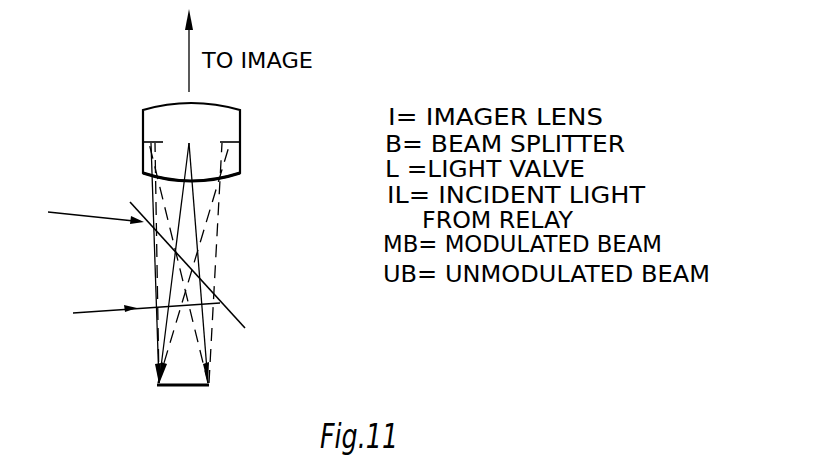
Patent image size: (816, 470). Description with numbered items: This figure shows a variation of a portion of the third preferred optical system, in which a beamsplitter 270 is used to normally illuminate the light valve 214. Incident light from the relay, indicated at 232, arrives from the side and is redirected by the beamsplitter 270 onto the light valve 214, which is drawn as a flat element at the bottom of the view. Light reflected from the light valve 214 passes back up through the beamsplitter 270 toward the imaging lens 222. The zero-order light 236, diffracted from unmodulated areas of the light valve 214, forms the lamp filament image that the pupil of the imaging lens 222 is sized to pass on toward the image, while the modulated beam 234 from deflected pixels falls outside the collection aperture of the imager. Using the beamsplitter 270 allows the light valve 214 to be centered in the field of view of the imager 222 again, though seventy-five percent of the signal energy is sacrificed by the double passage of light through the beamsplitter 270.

The imaging lens 222 is at (235, 128).
The zero-order light 236 is at (172, 191).
The modulated beam 234 is at (186, 229).
The incident light from relay 232 is at (108, 310).
The beamsplitter 270 is at (230, 308).
The light valve 214 is at (194, 390).